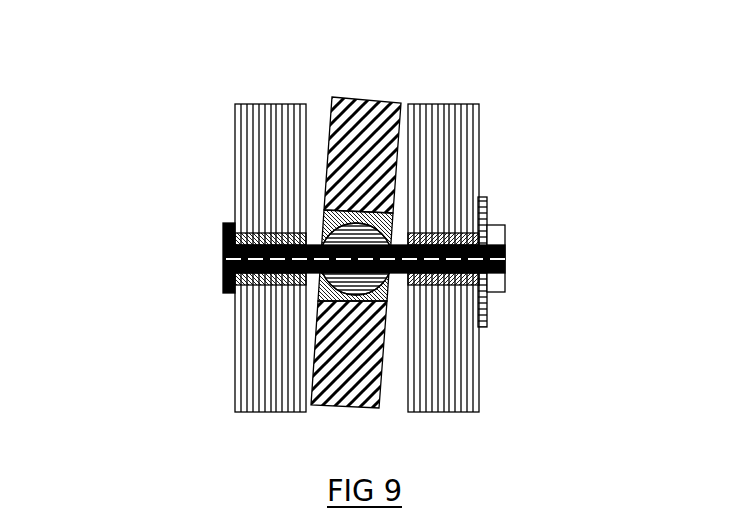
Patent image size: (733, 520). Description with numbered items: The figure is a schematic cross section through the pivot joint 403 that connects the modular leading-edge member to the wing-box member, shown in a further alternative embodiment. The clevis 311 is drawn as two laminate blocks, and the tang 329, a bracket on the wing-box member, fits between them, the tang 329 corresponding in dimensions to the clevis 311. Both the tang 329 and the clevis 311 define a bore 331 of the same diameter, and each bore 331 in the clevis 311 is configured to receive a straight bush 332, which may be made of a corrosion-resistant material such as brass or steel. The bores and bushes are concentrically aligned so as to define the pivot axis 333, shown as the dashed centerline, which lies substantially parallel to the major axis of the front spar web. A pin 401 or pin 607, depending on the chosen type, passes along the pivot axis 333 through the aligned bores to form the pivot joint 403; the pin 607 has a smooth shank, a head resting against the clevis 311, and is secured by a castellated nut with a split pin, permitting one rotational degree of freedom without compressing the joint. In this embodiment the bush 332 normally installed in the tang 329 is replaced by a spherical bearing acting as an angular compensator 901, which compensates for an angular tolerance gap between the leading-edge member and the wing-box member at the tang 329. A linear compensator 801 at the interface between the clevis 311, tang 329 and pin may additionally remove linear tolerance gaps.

The pivot joint 403 is at (317, 85).
The clevis 311 is at (255, 142).
The tang 329 is at (400, 128).
The linear compensator 801 is at (253, 233).
The angular compensator 901 is at (393, 212).
The bore 331 is at (328, 198).
The bush 332 is at (257, 282).
The pivot axis 333 is at (505, 260).
The pin 401 is at (223, 273).
The pin 607 is at (271, 258).